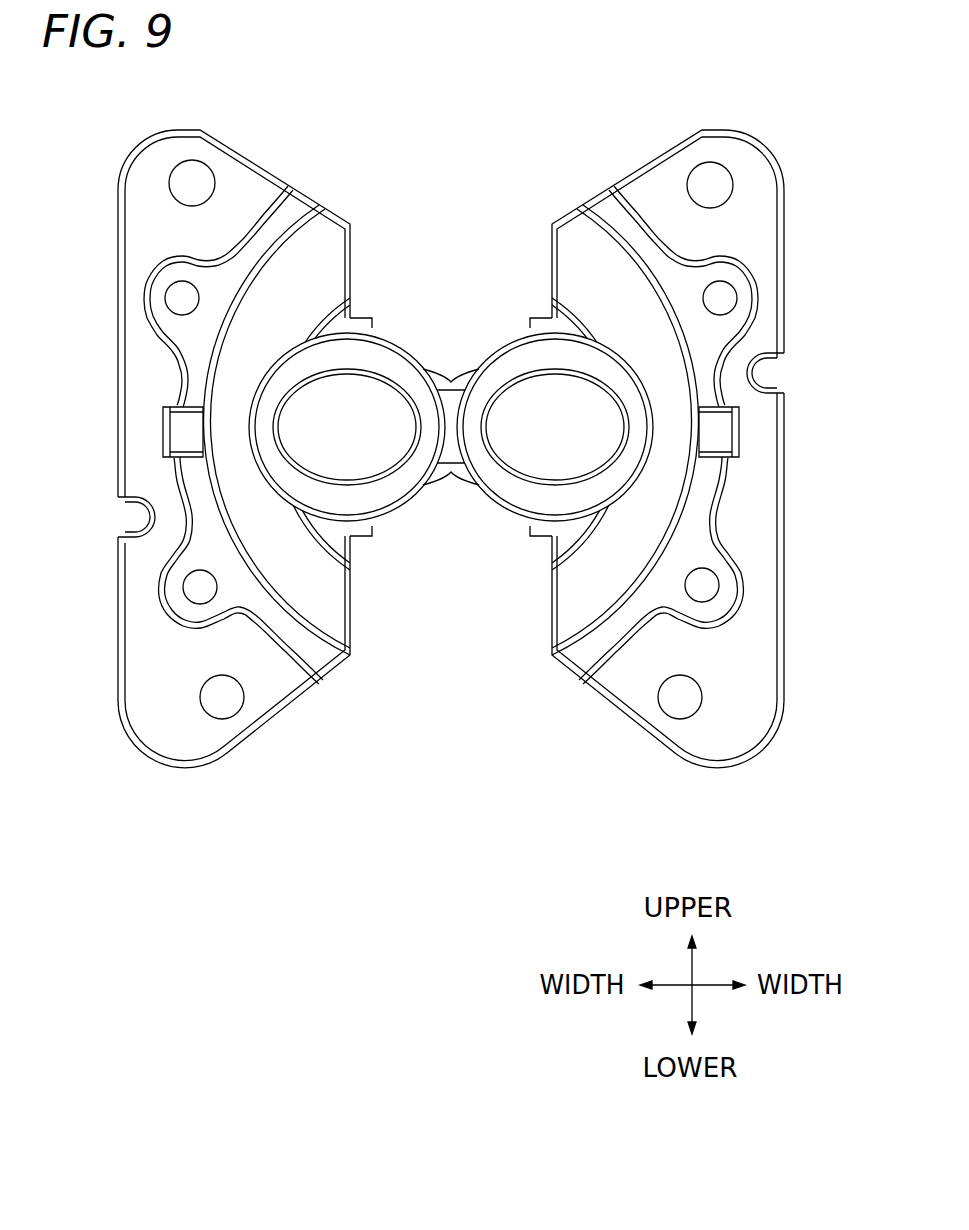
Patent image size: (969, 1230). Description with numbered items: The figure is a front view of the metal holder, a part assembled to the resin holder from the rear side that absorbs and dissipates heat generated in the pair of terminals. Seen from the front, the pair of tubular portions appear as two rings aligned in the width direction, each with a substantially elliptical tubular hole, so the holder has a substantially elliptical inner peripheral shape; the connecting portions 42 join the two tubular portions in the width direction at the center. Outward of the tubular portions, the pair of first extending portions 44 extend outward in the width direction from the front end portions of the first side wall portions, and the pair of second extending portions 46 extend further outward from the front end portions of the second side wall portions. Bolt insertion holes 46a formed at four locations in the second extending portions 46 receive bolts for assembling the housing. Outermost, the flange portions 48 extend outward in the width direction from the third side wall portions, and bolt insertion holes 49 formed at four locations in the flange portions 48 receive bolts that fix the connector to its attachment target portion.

The connecting portion 42 is at (453, 382).
The first extending portion 44 is at (303, 573).
The second extending portion 46 is at (196, 483).
The bolt insertion hole 46a is at (178, 305).
The flange portion 48 is at (143, 627).
The bolt insertion hole 49 is at (187, 196).